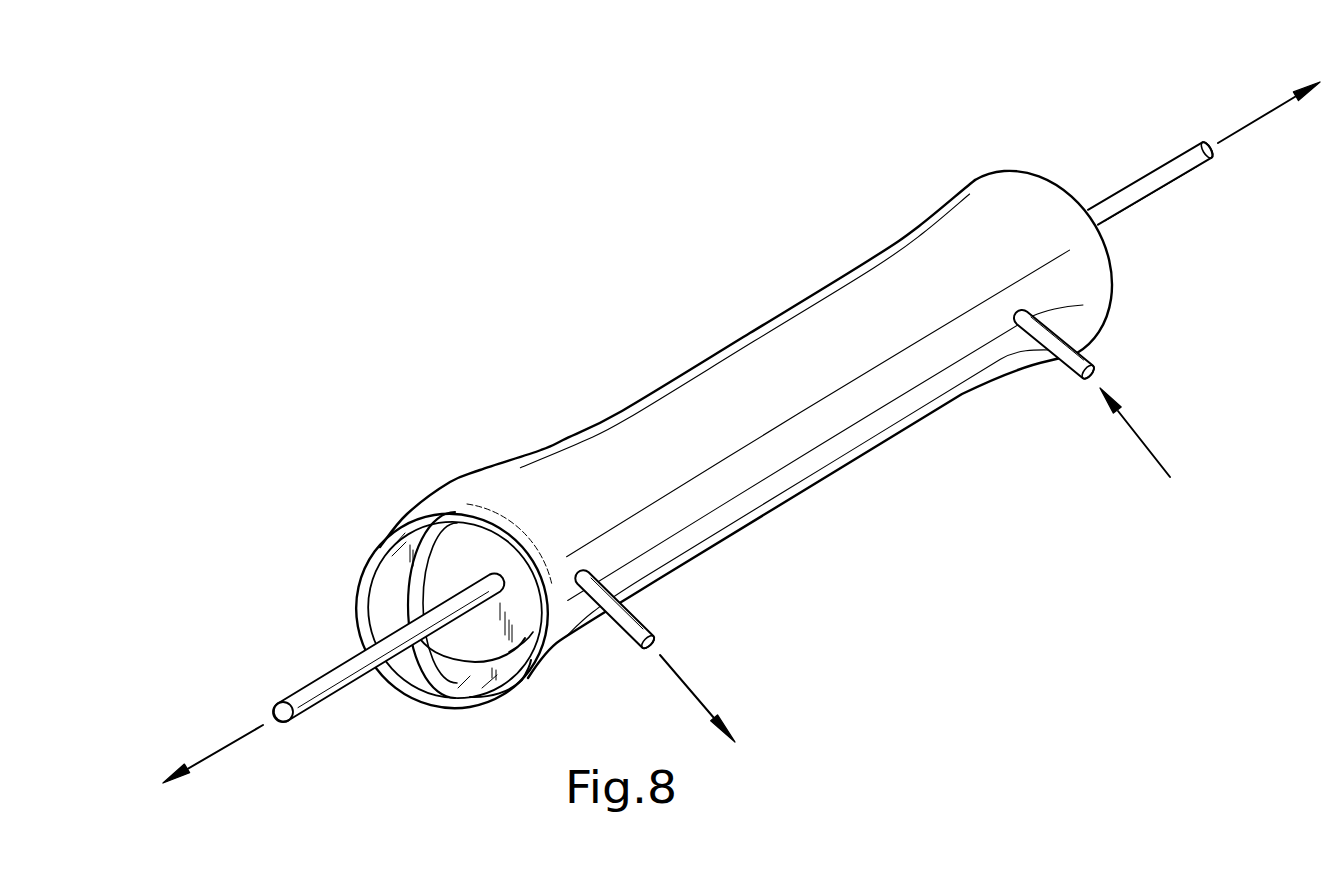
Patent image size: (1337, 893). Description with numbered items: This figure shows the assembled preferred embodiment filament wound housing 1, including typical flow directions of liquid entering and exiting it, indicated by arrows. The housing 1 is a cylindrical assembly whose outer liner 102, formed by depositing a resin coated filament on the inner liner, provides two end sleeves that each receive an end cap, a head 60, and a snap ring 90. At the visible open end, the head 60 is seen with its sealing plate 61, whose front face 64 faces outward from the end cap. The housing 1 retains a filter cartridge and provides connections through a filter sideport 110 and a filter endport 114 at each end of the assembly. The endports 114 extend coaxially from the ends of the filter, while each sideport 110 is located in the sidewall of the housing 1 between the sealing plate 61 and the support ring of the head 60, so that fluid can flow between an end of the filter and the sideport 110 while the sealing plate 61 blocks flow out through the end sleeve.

The filament wound housing assembly 1 is at (864, 103).
The outer liner 102 is at (552, 480).
The snap ring 90 is at (410, 578).
The front face 64 is at (468, 635).
The head 60 is at (498, 635).
The sealing plate 61 is at (527, 635).
The sideport 110 is at (1077, 362).
The endport 114 is at (1140, 180).